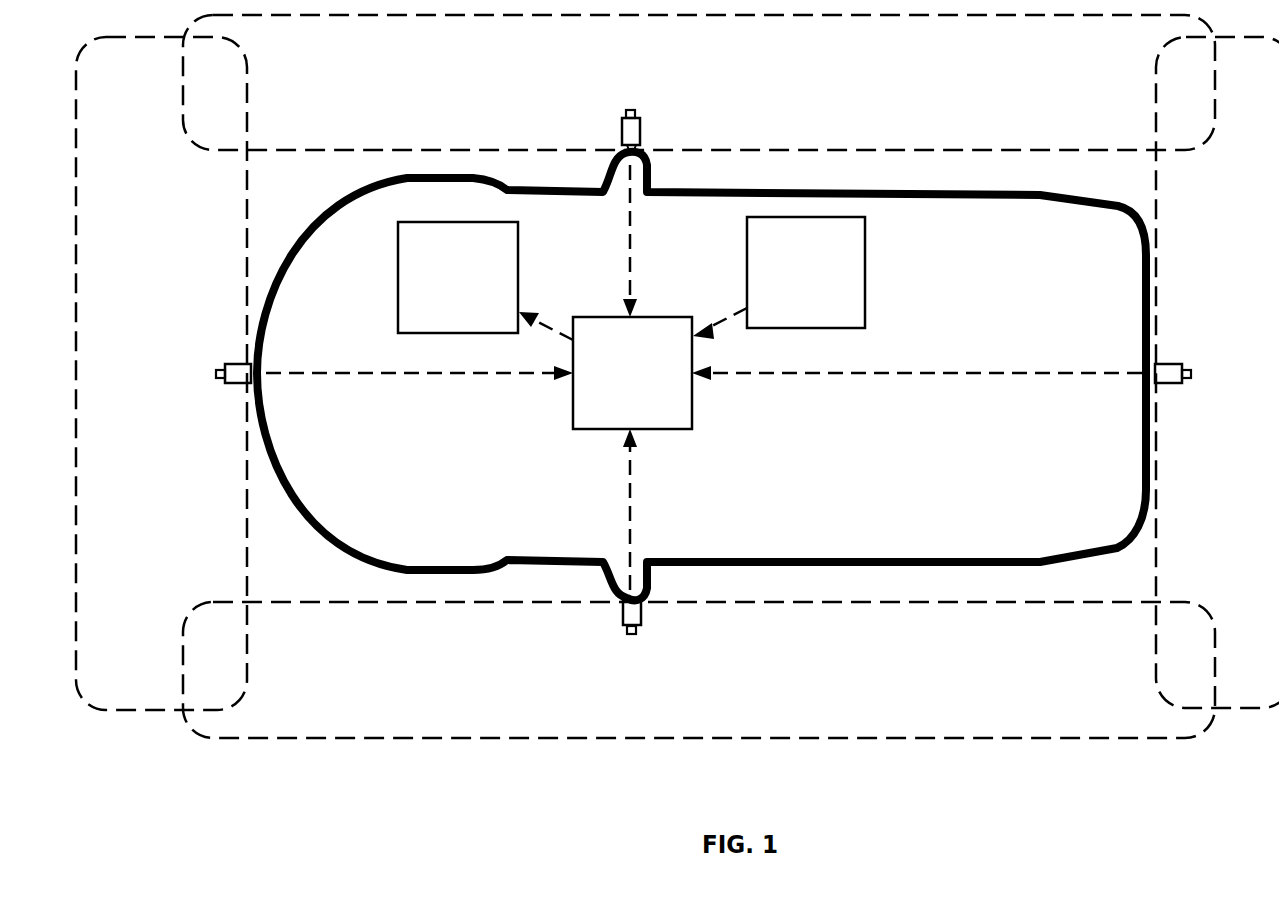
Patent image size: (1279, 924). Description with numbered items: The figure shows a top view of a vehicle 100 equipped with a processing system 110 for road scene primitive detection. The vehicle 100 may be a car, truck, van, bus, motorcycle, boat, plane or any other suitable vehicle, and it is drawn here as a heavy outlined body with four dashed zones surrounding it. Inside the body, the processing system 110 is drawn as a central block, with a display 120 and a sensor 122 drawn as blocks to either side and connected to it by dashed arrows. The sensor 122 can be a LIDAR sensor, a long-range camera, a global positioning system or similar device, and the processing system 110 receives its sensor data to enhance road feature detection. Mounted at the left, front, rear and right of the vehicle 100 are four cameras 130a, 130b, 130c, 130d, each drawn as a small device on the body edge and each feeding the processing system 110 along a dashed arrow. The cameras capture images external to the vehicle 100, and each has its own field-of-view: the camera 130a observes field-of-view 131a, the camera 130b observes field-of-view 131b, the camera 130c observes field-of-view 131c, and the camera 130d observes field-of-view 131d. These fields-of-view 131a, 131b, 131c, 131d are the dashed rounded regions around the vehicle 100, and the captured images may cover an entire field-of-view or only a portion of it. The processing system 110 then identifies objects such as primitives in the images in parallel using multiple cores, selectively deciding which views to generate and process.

The vehicle 100 is at (322, 210).
The processing system 110 is at (648, 386).
The display 120 is at (474, 288).
The sensor 122 is at (821, 284).
The camera 130a is at (240, 363).
The camera 130b is at (630, 110).
The camera 130c is at (628, 635).
The camera 130d is at (1165, 386).
The field-of-view 131a is at (183, 386).
The field-of-view 131b is at (720, 96).
The field-of-view 131c is at (720, 684).
The field-of-view 131d is at (1267, 386).